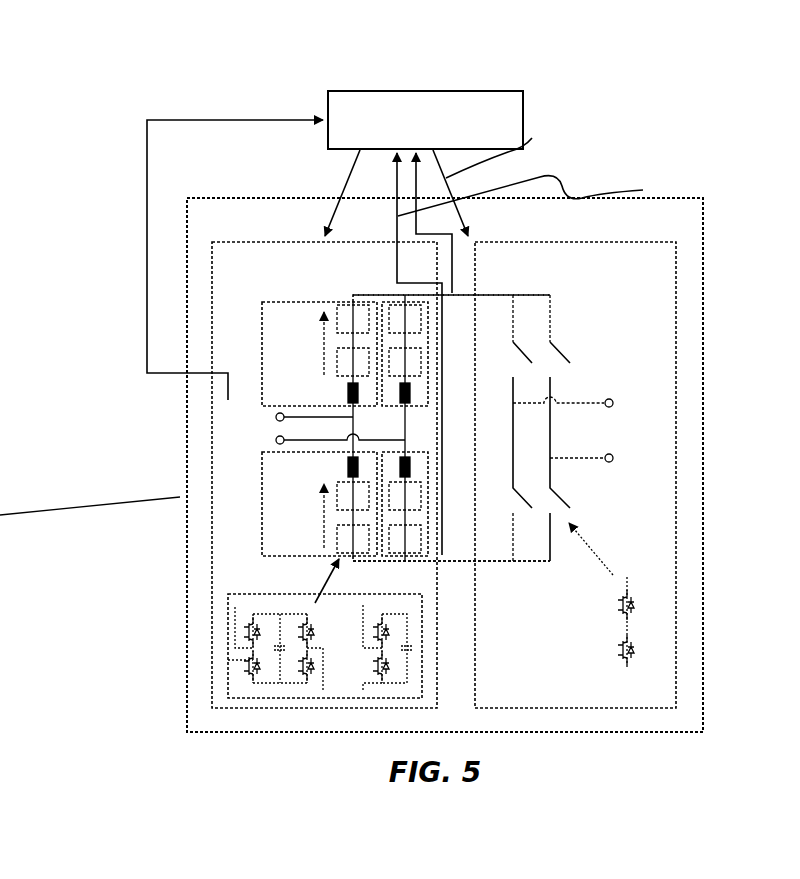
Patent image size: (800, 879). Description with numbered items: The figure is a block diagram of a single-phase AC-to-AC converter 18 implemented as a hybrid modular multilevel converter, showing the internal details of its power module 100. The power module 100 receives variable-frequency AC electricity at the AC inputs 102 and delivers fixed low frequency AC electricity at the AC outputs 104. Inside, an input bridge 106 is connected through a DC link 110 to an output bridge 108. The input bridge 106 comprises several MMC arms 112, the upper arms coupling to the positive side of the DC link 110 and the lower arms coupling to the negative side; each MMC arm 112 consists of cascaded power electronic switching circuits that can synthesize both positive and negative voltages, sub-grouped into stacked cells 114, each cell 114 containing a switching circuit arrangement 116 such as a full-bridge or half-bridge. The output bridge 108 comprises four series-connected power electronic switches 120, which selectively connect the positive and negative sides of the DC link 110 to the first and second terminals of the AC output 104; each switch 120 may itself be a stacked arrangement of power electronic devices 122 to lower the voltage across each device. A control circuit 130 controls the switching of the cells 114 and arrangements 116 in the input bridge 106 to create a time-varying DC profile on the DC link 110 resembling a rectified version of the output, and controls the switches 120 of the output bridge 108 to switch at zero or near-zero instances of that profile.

The AC-to-AC converter 18 is at (246, 62).
The power module 100 is at (703, 485).
The AC inputs 102 is at (327, 438).
The AC outputs 104 is at (560, 456).
The input bridge 106 is at (213, 244).
The output bridge 108 is at (676, 283).
The DC link 110 is at (488, 297).
The MMC arm 112 is at (262, 322).
The cell 114 is at (227, 600).
The switching circuit arrangement 116 is at (247, 660).
The power electronic switch 120 is at (562, 348).
The power electronic device 122 is at (632, 605).
The control circuit 130 is at (425, 120).